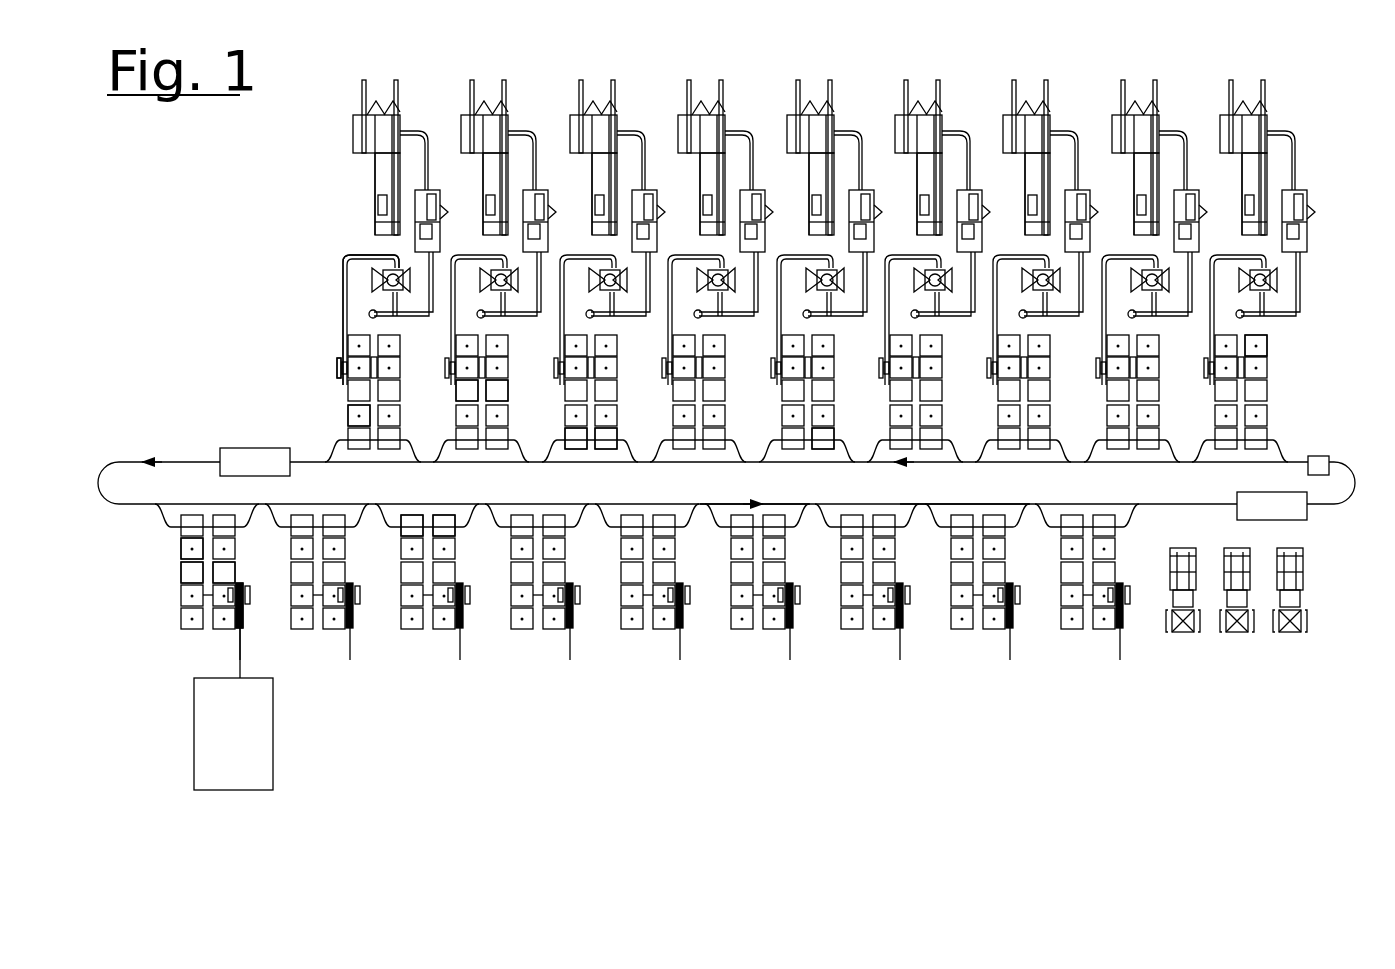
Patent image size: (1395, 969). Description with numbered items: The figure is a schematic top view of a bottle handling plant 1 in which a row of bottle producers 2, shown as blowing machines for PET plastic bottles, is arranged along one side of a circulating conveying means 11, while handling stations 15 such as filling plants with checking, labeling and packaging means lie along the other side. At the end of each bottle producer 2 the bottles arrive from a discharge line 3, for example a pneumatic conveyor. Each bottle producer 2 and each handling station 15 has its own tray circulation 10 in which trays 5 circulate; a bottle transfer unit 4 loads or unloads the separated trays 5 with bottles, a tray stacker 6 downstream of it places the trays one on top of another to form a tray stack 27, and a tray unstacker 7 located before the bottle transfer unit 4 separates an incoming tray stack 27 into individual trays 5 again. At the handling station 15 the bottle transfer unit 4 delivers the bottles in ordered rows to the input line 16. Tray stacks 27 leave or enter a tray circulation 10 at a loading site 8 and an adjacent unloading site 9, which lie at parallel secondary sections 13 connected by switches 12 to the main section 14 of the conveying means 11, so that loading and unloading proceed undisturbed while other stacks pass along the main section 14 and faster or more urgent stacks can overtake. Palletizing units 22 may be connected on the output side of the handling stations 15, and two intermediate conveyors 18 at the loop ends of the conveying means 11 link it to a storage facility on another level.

The bottle handling plant 1 is at (213, 297).
The bottle producer 2 is at (488, 78).
The discharge line 3 is at (342, 277).
The bottle transfer unit 4 is at (340, 358).
The tray 5 is at (1270, 347).
The tray stacker 6 is at (467, 395).
The tray unstacker 7 is at (498, 395).
The loading site 8 is at (440, 522).
The unloading site 9 is at (412, 522).
The tray circulation 10 is at (346, 413).
The conveying means 11 is at (180, 462).
The switch 12 is at (795, 503).
The secondary section 13 is at (862, 527).
The main section 14 is at (1003, 503).
The handling station 15 is at (227, 742).
The input line 16 is at (243, 658).
The intermediate conveyor 18 is at (235, 460).
The palletizing unit 22 is at (1237, 633).
The tray stack 27 is at (1320, 455).